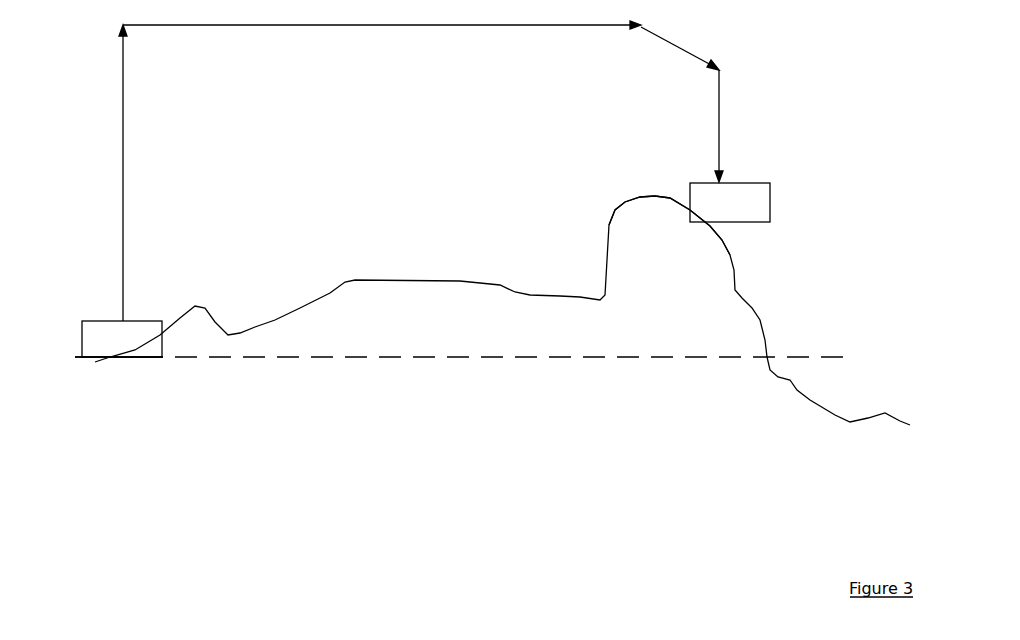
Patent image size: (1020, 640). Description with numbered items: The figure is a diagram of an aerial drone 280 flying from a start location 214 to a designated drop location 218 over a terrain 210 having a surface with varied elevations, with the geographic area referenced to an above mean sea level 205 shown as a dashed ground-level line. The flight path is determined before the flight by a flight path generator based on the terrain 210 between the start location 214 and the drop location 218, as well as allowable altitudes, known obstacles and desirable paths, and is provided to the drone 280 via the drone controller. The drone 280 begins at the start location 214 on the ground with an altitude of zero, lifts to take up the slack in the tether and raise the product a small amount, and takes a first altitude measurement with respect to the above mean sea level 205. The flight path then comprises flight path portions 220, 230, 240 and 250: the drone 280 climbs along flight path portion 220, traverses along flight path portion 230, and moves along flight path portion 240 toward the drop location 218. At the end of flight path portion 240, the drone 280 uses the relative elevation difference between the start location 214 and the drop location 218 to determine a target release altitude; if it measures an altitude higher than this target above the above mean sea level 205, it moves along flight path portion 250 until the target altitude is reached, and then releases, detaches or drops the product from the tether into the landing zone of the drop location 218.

The above mean sea level 205 is at (464, 394).
The terrain 210 is at (502, 310).
The start location 214 is at (90, 367).
The drop location 218 is at (669, 225).
The flight path portion 220 is at (100, 173).
The flight path portion 230 is at (382, 42).
The flight path portion 240 is at (681, 48).
The flight path portion 250 is at (734, 126).
The drone 280 is at (440, 260).